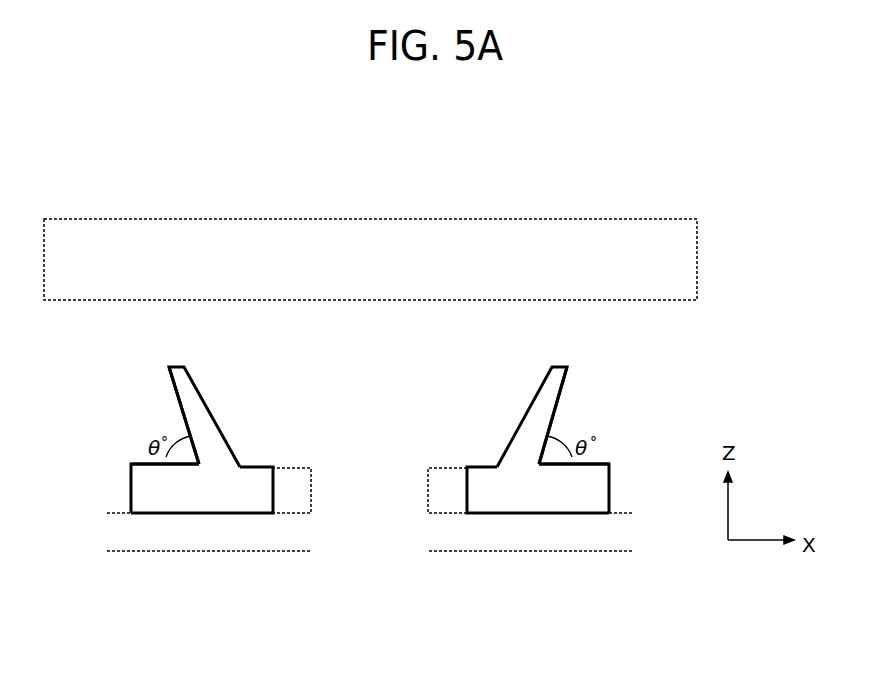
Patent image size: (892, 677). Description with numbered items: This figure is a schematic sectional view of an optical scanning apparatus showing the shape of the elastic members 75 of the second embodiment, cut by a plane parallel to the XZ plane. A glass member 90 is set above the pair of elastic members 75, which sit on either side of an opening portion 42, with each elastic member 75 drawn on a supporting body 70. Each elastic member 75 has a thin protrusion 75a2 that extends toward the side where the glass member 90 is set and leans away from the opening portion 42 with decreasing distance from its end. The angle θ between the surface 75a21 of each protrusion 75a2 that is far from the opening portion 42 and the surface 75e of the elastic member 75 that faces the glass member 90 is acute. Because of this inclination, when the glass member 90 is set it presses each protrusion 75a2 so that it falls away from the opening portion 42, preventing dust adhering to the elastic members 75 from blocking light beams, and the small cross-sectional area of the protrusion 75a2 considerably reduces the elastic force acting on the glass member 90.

The glass member 90 is at (575, 240).
The elastic member 75 is at (290, 513).
The support member 70 is at (203, 493).
The protrusion 75a2 is at (187, 383).
The surface of protrusion 75a21 is at (180, 410).
The surface of elastic member 75e is at (140, 460).
The opening portion 42 is at (358, 512).